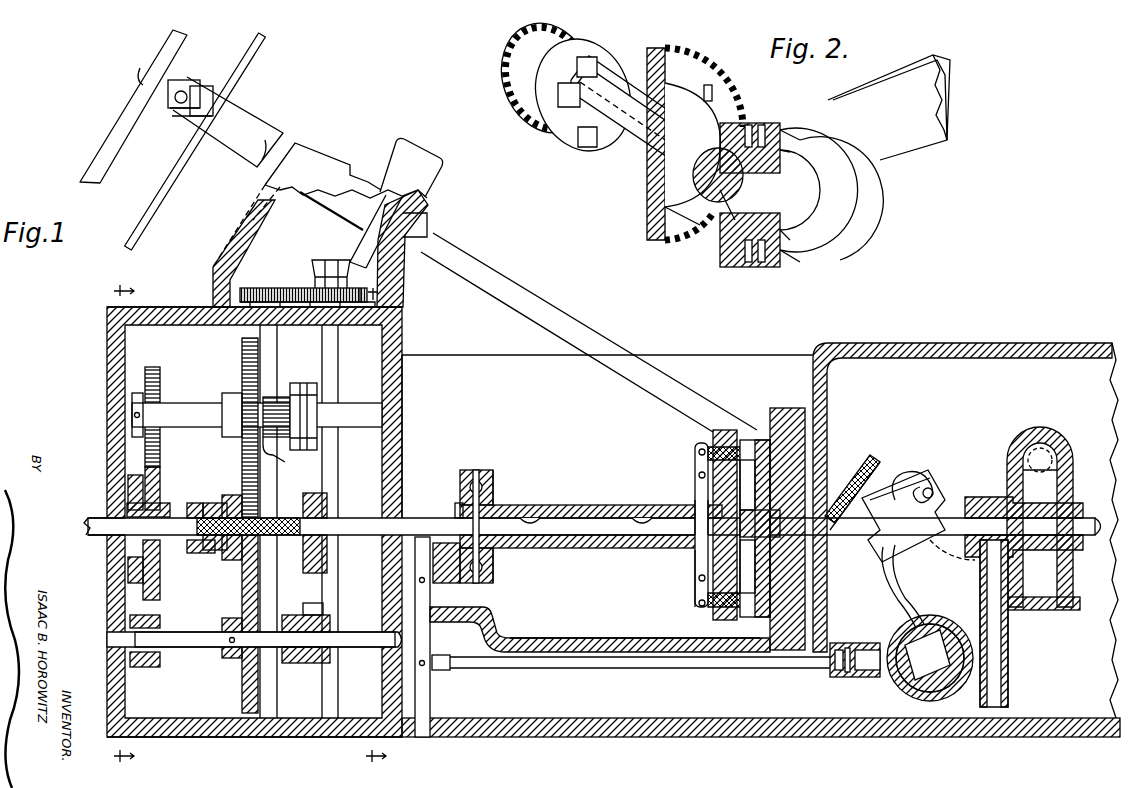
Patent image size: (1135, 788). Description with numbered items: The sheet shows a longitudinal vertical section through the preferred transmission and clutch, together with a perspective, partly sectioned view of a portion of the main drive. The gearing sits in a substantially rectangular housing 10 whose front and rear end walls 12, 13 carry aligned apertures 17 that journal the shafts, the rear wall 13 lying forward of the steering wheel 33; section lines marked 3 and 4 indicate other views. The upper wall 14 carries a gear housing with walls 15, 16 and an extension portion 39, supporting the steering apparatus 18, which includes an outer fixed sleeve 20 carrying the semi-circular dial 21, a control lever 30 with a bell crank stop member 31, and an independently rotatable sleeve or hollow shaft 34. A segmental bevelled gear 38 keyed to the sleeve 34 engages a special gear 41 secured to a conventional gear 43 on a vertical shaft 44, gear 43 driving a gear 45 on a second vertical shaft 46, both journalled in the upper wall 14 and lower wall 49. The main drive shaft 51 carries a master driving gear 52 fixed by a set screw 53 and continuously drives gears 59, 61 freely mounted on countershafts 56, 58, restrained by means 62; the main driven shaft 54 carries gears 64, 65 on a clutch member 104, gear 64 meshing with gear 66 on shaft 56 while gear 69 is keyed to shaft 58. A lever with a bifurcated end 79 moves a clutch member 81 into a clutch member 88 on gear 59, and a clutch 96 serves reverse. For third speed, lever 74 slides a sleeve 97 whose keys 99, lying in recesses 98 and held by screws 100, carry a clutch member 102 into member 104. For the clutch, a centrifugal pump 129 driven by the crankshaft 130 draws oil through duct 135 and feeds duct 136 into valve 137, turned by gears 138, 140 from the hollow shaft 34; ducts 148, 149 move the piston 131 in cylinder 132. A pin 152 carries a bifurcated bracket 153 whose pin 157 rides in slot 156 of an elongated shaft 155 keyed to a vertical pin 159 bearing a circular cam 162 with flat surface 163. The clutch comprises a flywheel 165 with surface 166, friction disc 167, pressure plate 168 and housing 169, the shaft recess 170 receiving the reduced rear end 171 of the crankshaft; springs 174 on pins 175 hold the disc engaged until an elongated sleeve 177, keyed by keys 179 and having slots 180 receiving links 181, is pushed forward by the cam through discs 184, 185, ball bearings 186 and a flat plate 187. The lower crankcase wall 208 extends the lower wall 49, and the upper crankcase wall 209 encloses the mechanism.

In FIG. 1, the section line 3- 3 is at (133, 521).
In FIG. 1, the section line 4- 4 is at (384, 755).
In FIG. 1, the housing 10 is at (418, 350).
In FIG. 1, the front end wall 12 is at (403, 384).
In FIG. 1, the rear end wall 13 is at (107, 370).
In FIG. 1, the upper wall 14 is at (168, 307).
In FIG. 1, the gear housing wall 15 is at (403, 287).
In FIG. 1, the gear housing wall 16 is at (240, 240).
In FIG. 1, the aligned apertures 17 is at (107, 632).
In FIG. 1, the steering apparatus 18 is at (329, 150).
In FIG. 1, the outer fixed sleeve 20 is at (310, 200).
In FIG. 1, the semi-circular dial 21 is at (255, 62).
In FIG. 1, the control lever 30 is at (186, 92).
In FIG. 1, the bell crank stop member 31 is at (228, 118).
In FIG. 1, the steering wheel 33 is at (50, 140).
In FIG. 1, the sleeve or hollow shaft 34 is at (435, 232).
In FIG. 1, the segmental bevelled gear 38 is at (358, 252).
In FIG. 1, the extension portion 39 is at (420, 145).
In FIG. 1, the special gear 41 is at (312, 270).
In FIG. 1, the conventional gear 43 is at (369, 283).
In FIG. 1, the vertical shaft 44 is at (338, 379).
In FIG. 1, the gear 45 is at (248, 288).
In FIG. 1, the second vertical shaft 46 is at (278, 372).
In FIG. 1, the lower wall 49 is at (232, 737).
In FIG. 1, the main drive shaft 51 is at (415, 517).
In FIG. 2, the main drive shaft 51 is at (616, 166).
In FIG. 1, the master driving gear 52 is at (230, 495).
In FIG. 2, the master driving gear 52 is at (700, 70).
In FIG. 2, the set screw 53 is at (714, 93).
In FIG. 1, the main driven shaft 54 is at (112, 530).
In FIG. 1, the countershaft 56 is at (183, 403).
In FIG. 1, the countershaft 58 is at (205, 647).
In FIG. 1, the gear 59 is at (242, 352).
In FIG. 1, the gear 61 is at (242, 690).
In FIG. 1, the restraining means 62 is at (232, 393).
In FIG. 1, the gear 64 is at (162, 470).
In FIG. 1, the gear 65 is at (160, 568).
In FIG. 1, the gear 66 is at (152, 367).
In FIG. 1, the gear 69 is at (160, 622).
In FIG. 2, the lever 74 is at (940, 92).
In FIG. 1, the bifurcated end 79 is at (295, 393).
In FIG. 2, the bifurcated end 79 is at (786, 108).
In FIG. 1, the clutch member 81 is at (300, 450).
In FIG. 1, the clutch member 88 is at (280, 462).
In FIG. 1, the clutch 96 is at (298, 663).
In FIG. 1, the slidable sleeve 97 is at (303, 560).
In FIG. 2, the slidable sleeve 97 is at (738, 250).
In FIG. 1, the longitudinal recesses 98 is at (208, 553).
In FIG. 2, the longitudinal recesses 98 is at (738, 180).
In FIG. 1, the longitudinally movable keys 99 is at (222, 548).
In FIG. 2, the longitudinally movable keys 99 is at (680, 230).
In FIG. 1, the screws 100 is at (230, 516).
In FIG. 2, the screws 100 is at (725, 230).
In FIG. 1, the clutch member 102 is at (200, 553).
In FIG. 2, the clutch member 102 is at (530, 120).
In FIG. 1, the clutch member 104 is at (165, 503).
In FIG. 1, the centrifugal pump 129 is at (1085, 460).
In FIG. 1, the crankshaft 130 is at (1085, 515).
In FIG. 1, the piston 131 is at (925, 616).
In FIG. 1, the cylinder 132 is at (945, 625).
In FIG. 1, the duct 135 is at (1008, 680).
In FIG. 1, the duct 136 is at (935, 560).
In FIG. 1, the valve 137 is at (872, 547).
In FIG. 1, the gear 138 is at (878, 462).
In FIG. 1, the gear 140 is at (853, 479).
In FIG. 1, the duct 148 is at (922, 472).
In FIG. 1, the duct 149 is at (895, 605).
In FIG. 1, the pin 152 is at (895, 685).
In FIG. 1, the bifurcated bracket 153 is at (860, 677).
In FIG. 1, the elongated shaft 155 is at (713, 668).
In FIG. 1, the slot 156 is at (866, 643).
In FIG. 1, the pin 157 is at (840, 643).
In FIG. 1, the vertical pin or shaft 159 is at (437, 622).
In FIG. 1, the circular cam 162 is at (448, 583).
In FIG. 1, the flat surface 163 is at (465, 577).
In FIG. 1, the flywheel 165 is at (782, 408).
In FIG. 1, the flywheel surface 166 is at (762, 440).
In FIG. 1, the friction disc 167 is at (828, 440).
In FIG. 1, the pressure plate 168 is at (740, 485).
In FIG. 1, the housing 169 is at (720, 430).
In FIG. 1, the recess 170 is at (740, 566).
In FIG. 1, the reduced rear end portion 171 is at (780, 524).
In FIG. 1, the springs 174 is at (695, 491).
In FIG. 1, the pins 175 is at (708, 450).
In FIG. 1, the elongated sleeve 177 is at (638, 548).
In FIG. 1, the keys 179 is at (548, 516).
In FIG. 1, the slots 180 is at (695, 560).
In FIG. 1, the centrally pivoted links 181 is at (695, 575).
In FIG. 1, the circular disc 184 is at (495, 472).
In FIG. 1, the circular disc 185 is at (468, 470).
In FIG. 1, the ball bearings 186 is at (478, 470).
In FIG. 1, the flat plate 187 is at (458, 510).
In FIG. 1, the lower wall of crankcase 208 is at (728, 737).
In FIG. 1, the upper wall of crankcase 209 is at (543, 638).